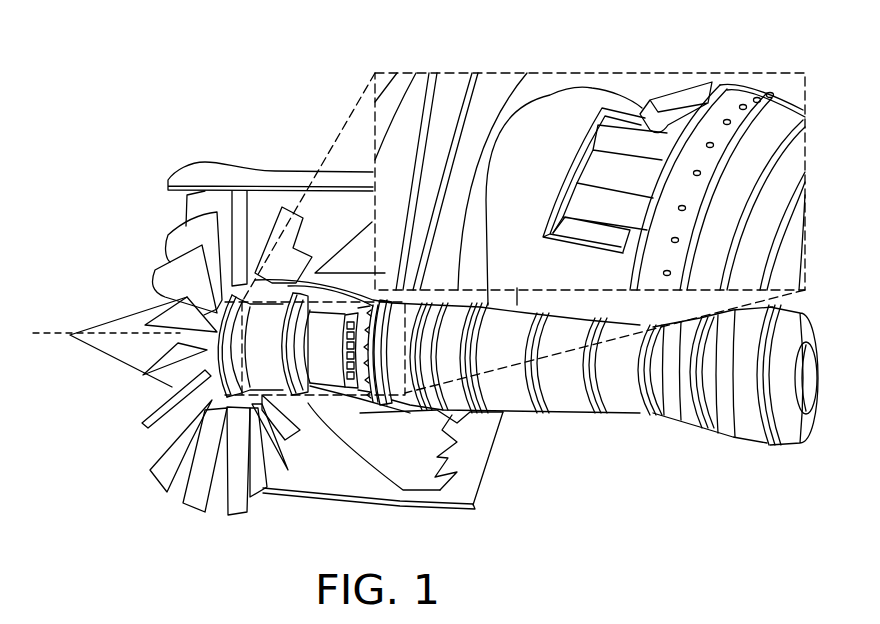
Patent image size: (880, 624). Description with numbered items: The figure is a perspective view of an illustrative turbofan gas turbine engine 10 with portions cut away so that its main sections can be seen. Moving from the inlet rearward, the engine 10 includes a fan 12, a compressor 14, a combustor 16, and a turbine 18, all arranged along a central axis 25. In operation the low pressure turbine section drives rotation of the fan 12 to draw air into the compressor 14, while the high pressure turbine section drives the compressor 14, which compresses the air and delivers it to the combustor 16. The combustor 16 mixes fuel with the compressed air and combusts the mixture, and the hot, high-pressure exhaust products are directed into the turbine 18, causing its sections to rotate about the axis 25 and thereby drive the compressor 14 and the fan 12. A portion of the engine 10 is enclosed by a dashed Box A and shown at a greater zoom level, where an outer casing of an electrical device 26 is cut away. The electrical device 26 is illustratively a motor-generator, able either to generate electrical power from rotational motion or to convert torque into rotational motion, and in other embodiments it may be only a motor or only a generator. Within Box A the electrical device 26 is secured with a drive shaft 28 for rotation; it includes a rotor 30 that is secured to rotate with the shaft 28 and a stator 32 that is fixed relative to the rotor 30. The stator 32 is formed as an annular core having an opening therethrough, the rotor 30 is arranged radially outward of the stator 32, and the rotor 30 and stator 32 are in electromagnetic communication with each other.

The turbofan gas turbine engine 10 is at (95, 157).
The fan 12 is at (133, 445).
The compressor 14 is at (450, 328).
The combustor 16 is at (565, 413).
The turbine 18 is at (684, 420).
The axis 25 is at (55, 334).
The electrical device 26 is at (318, 362).
The drive shaft 28 is at (612, 191).
The rotor 30 is at (615, 135).
The stator 32 is at (658, 136).
The Box A is at (805, 87).